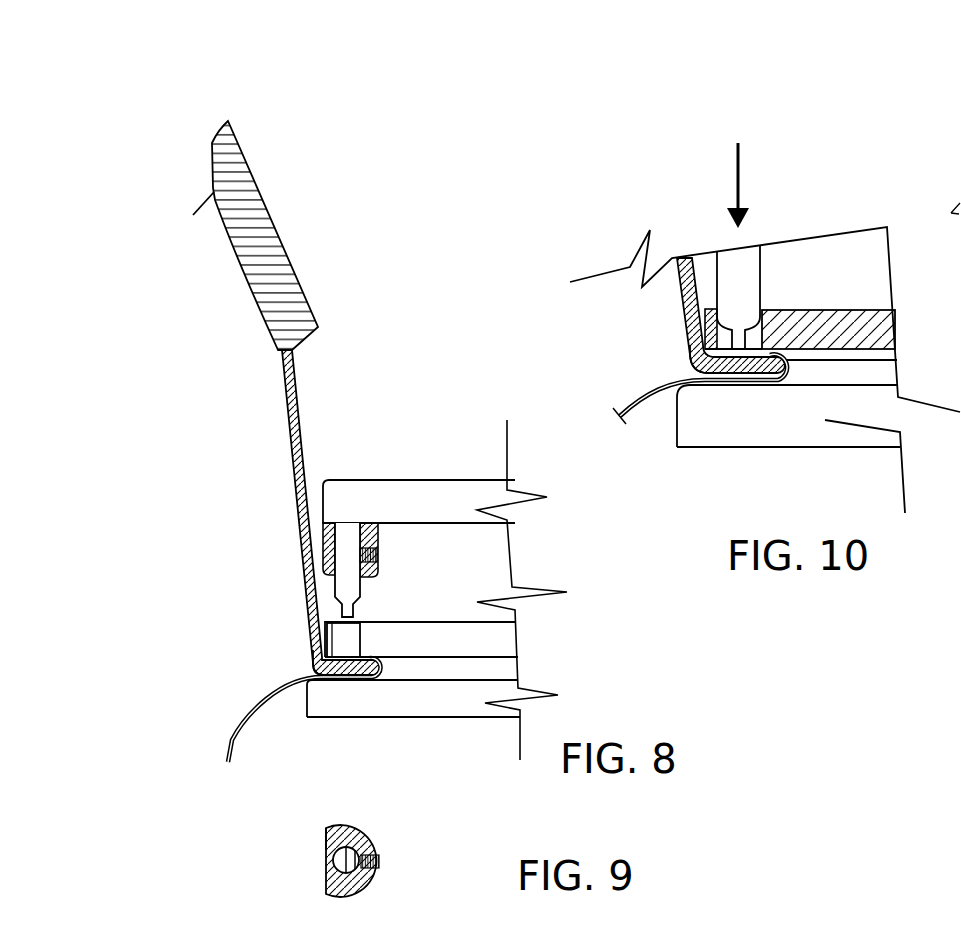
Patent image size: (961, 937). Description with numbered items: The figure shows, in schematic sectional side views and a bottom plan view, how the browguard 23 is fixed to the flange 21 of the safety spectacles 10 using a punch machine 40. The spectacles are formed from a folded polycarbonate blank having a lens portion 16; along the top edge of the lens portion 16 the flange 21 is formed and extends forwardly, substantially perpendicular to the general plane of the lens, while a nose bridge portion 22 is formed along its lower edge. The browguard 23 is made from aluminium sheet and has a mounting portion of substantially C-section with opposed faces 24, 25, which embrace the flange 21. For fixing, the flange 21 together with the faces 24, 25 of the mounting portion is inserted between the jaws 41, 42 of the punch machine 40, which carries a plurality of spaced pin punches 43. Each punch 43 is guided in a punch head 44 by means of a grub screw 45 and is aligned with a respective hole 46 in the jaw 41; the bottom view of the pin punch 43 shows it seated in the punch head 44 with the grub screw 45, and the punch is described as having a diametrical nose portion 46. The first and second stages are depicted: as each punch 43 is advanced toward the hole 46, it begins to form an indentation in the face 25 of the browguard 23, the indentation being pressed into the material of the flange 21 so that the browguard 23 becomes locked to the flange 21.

In FIG. 8, the safety spectacles 10 is at (373, 257).
In FIG. 8, the lens portion 16 is at (302, 420).
In FIG. 10, the lens portion 16 is at (677, 282).
In FIG. 8, the flange 21 is at (305, 668).
In FIG. 10, the flange 21 is at (698, 361).
In FIG. 8, the nose bridge portion 22 is at (262, 183).
In FIG. 8, the browguard 23 is at (270, 713).
In FIG. 8, the face 24 is at (362, 677).
In FIG. 10, the face 24 is at (753, 381).
In FIG. 8, the face 25 is at (367, 657).
In FIG. 10, the face 25 is at (787, 357).
In FIG. 8, the punch machine 40 is at (455, 457).
In FIG. 8, the jaw 41 is at (525, 640).
In FIG. 10, the jaw 41 is at (853, 303).
In FIG. 8, the jaw 42 is at (532, 705).
In FIG. 10, the jaw 42 is at (815, 432).
In FIG. 8, the pin punch 43 is at (345, 535).
In FIG. 9, the pin punch 43 is at (385, 862).
In FIG. 10, the pin punch 43 is at (758, 310).
In FIG. 8, the punch head 44 is at (380, 505).
In FIG. 9, the punch head 44 is at (328, 882).
In FIG. 8, the grub screw 45 is at (380, 557).
In FIG. 9, the grub screw 45 is at (383, 860).
In FIG. 8, the hole 46 is at (343, 637).
In FIG. 9, the hole 46 is at (325, 848).
In FIG. 10, the hole 46 is at (753, 343).